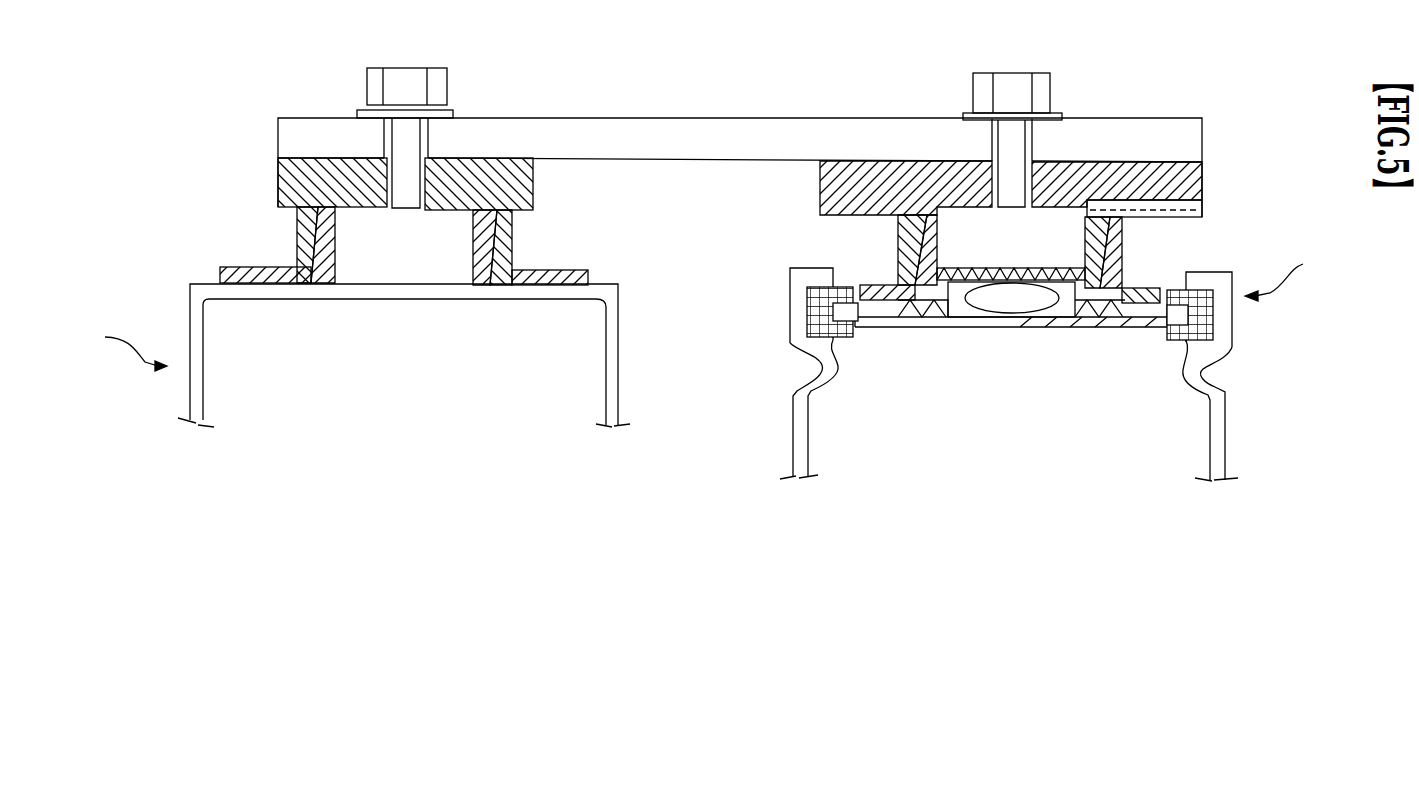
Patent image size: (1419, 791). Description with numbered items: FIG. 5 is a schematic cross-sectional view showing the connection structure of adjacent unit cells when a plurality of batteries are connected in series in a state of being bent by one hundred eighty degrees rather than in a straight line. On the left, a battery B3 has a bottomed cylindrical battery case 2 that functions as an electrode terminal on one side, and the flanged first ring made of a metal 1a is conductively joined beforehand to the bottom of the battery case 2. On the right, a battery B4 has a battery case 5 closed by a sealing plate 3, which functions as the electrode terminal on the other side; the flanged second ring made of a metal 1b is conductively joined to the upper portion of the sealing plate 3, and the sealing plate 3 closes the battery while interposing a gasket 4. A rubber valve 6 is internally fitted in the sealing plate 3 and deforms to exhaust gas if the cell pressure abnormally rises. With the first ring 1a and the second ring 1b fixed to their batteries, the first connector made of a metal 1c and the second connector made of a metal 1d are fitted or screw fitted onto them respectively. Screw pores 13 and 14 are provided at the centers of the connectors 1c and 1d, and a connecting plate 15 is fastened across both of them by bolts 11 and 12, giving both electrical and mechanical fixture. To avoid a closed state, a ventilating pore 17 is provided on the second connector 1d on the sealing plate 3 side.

The first ring made of a metal 1a is at (258, 268).
The second ring made of a metal 1b is at (1112, 268).
The first connector made of a metal 1c is at (290, 188).
The second connector made of a metal 1d is at (1185, 165).
The battery case 2 is at (613, 370).
The sealing plate 3 is at (1163, 325).
The gasket 4 is at (1190, 335).
The battery case 5 is at (1215, 468).
The rubber valve 6 is at (1012, 300).
The bolt 11 is at (1045, 80).
The bolt 12 is at (435, 80).
The screw pore 13 is at (450, 157).
The screw pore 14 is at (985, 190).
The connecting plate 15 is at (665, 138).
The ventilating pore 17 is at (1185, 200).
The battery B3 is at (121, 345).
The battery B4 is at (1297, 275).